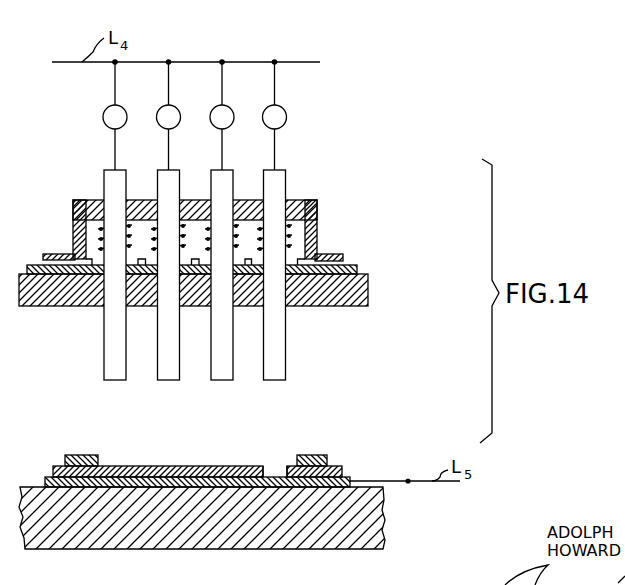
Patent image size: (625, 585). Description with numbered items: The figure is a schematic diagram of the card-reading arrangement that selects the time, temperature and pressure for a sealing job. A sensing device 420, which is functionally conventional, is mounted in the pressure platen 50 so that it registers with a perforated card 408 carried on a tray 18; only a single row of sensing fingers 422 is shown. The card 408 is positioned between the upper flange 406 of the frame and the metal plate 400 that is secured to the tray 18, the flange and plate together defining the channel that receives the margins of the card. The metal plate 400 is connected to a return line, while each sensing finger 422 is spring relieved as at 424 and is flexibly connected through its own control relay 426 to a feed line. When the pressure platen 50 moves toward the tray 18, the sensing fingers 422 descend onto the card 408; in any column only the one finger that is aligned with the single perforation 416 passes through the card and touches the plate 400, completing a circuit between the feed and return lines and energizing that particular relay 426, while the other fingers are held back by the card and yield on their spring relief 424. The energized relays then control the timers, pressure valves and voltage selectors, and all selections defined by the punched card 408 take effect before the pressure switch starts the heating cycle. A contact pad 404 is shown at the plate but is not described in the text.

The tray 18 is at (385, 518).
The pressure platen 50 is at (366, 283).
The conductive plate 400 is at (45, 478).
The contact pad 404 is at (338, 467).
The upper flange 406 is at (319, 455).
The card 408 is at (191, 466).
The perforation 416 is at (268, 467).
The sensing device 420 is at (329, 236).
The sensing fingers 422 is at (120, 368).
The spring relief 424 is at (123, 250).
The control relay 426 is at (124, 125).